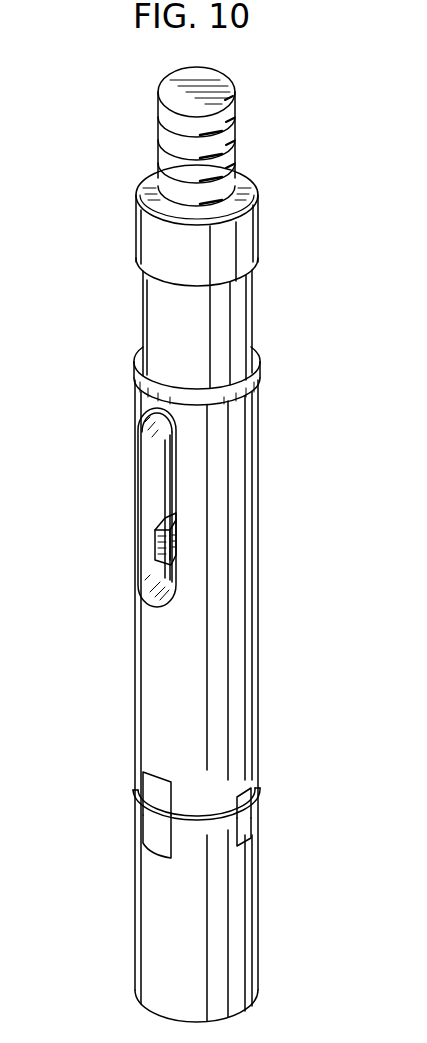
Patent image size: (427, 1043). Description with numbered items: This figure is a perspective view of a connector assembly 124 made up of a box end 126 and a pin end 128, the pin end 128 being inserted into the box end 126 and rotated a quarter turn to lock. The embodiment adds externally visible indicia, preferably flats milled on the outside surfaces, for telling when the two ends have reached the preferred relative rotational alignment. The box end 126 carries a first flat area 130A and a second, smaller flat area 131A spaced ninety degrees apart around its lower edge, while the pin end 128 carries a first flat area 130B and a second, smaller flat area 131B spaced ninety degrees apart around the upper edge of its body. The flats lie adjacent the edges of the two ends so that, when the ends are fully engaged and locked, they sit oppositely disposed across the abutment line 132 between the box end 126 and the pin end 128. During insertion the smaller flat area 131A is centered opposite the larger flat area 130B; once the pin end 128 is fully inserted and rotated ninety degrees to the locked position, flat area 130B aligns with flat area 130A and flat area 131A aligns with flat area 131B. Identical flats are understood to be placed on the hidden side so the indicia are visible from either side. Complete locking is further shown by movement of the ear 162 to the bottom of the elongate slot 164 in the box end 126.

The connector assembly 124 is at (298, 163).
The box end 126 is at (245, 540).
The pin end 128 is at (155, 925).
The first flat area 130A is at (143, 782).
The first flat area 130B is at (143, 830).
The second flat area 131A is at (252, 785).
The second flat area 131B is at (258, 834).
The abutment line 132 is at (258, 800).
The ear 162 is at (160, 545).
The elongate slot 164 is at (163, 466).